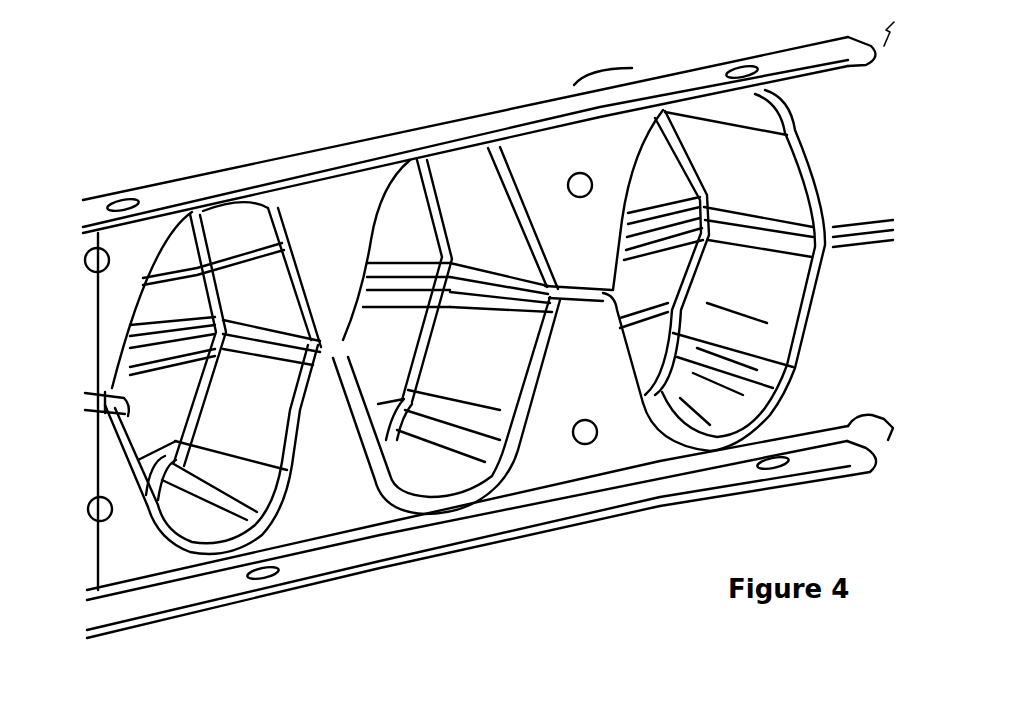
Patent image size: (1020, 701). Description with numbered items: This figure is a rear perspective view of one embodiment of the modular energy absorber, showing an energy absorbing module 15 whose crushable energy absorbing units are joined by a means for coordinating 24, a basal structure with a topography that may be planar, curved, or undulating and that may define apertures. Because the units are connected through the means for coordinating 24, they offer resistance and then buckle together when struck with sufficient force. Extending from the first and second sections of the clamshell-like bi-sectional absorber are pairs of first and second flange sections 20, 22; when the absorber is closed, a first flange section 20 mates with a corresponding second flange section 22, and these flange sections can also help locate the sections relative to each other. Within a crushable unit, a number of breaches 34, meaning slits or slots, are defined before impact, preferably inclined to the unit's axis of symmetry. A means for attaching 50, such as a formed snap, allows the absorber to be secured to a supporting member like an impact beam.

The energy absorbing module 15 is at (523, 518).
The first flange section 20 is at (107, 410).
The second flange section 22 is at (323, 357).
The means for coordinating 24 is at (595, 320).
The breaches 34 is at (723, 387).
The means for attaching 50 is at (337, 162).